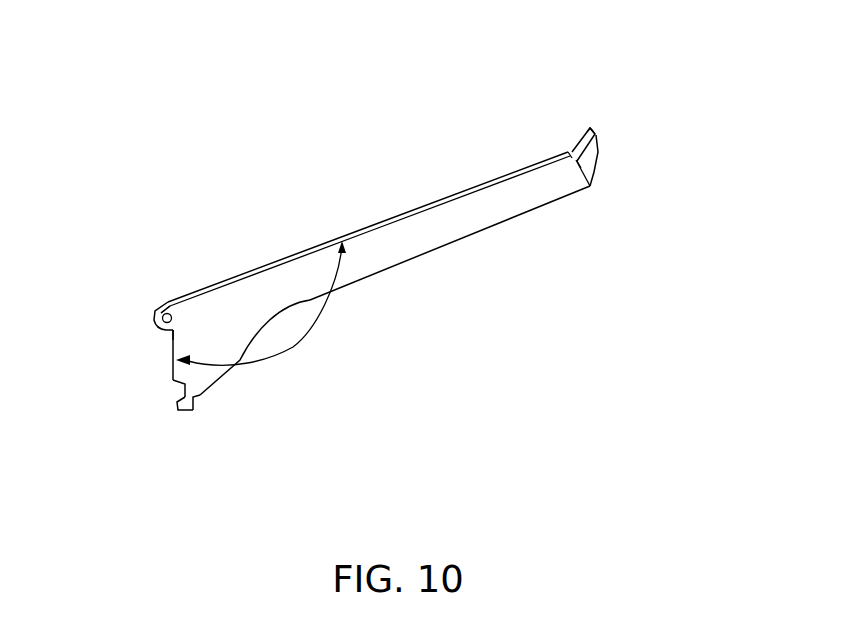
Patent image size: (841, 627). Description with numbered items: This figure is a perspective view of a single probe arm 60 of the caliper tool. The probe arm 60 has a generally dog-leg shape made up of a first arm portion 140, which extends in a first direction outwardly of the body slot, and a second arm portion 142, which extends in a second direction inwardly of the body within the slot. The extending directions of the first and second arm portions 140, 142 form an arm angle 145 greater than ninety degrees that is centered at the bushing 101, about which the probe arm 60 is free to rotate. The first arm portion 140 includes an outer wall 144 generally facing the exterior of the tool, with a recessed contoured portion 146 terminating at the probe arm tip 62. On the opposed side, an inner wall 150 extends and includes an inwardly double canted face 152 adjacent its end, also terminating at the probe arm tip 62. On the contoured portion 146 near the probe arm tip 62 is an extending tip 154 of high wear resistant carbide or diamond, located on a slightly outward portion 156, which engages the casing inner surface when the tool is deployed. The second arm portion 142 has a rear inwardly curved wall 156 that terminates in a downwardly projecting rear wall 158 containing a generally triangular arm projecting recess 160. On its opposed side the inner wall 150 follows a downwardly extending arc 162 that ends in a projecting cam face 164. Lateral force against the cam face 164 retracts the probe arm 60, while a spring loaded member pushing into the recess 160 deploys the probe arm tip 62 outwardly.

The probe arm 60 is at (495, 247).
The probe arm tip 62 is at (593, 120).
The bushing 101 is at (181, 298).
The first arm portion 140 is at (423, 190).
The second arm portion 142 is at (154, 418).
The outer wall 144 is at (302, 243).
The arm angle 145 is at (293, 347).
The recessed contoured portion 146 is at (490, 168).
The inner wall 150 is at (413, 262).
The inwardly double canted face 152 is at (601, 152).
The extending tip 154 is at (580, 116).
The rear inwardly curved wall 156 is at (161, 319).
The downwardly projecting rear wall 158 is at (173, 369).
The arm projecting recess 160 is at (174, 387).
The downwardly extending arc 162 is at (220, 397).
The cam face 164 is at (197, 403).